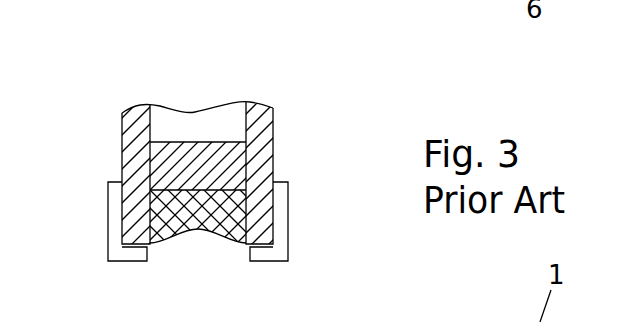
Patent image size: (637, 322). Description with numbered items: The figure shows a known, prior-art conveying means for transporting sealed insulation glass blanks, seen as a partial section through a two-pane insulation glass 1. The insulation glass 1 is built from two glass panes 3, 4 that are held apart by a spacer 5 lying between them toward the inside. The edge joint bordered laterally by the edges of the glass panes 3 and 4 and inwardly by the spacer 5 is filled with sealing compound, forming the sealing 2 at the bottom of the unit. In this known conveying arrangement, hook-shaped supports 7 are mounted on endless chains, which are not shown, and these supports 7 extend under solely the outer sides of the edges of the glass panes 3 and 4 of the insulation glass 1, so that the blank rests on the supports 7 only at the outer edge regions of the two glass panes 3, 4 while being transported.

The insulation glass 1 is at (198, 101).
The sealing 2 is at (183, 213).
The glass pane 3 is at (140, 115).
The glass pane 4 is at (258, 140).
The spacer 5 is at (183, 178).
The hook-shaped supports 7 is at (120, 221).